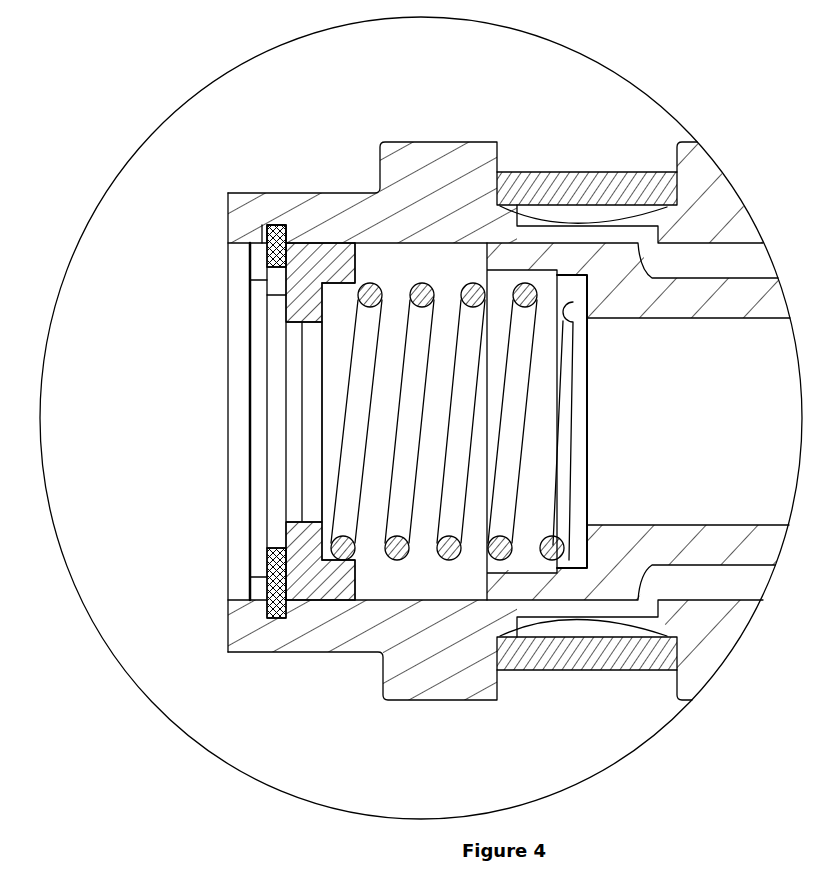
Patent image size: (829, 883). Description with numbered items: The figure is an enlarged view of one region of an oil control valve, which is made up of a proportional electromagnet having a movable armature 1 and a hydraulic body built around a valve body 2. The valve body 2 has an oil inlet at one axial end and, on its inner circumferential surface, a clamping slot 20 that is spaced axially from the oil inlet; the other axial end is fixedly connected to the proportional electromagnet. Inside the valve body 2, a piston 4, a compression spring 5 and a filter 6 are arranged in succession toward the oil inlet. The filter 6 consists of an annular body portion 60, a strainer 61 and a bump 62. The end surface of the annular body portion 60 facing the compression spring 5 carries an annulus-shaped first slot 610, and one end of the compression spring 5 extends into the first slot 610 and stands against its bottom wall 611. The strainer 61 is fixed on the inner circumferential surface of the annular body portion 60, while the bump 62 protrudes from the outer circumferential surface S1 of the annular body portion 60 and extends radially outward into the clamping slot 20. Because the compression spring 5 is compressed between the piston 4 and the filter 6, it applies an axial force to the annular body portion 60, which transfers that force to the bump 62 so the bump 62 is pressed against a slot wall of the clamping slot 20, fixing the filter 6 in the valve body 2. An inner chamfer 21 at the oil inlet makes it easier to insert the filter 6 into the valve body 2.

The movable armature 1 is at (210, 462).
The valve body 2 is at (445, 224).
The piston 4 is at (592, 307).
The compression spring 5 is at (516, 287).
The filter 6 is at (221, 421).
The clamping slot 20 is at (270, 221).
The inner chamfer 21 is at (240, 600).
The annular body portion 60 is at (250, 281).
The strainer 61 is at (241, 421).
The bump 62 is at (250, 243).
The first slot 610 is at (355, 283).
The bottom wall 611 is at (350, 276).
The outer circumferential surface S1 is at (270, 235).